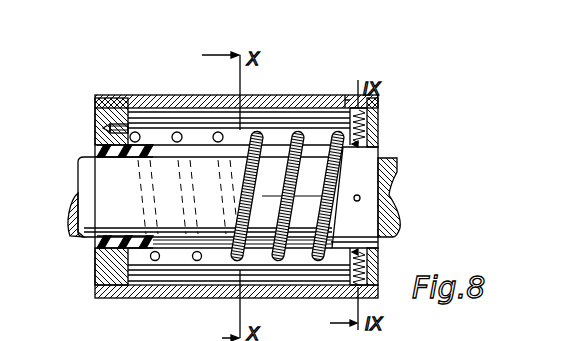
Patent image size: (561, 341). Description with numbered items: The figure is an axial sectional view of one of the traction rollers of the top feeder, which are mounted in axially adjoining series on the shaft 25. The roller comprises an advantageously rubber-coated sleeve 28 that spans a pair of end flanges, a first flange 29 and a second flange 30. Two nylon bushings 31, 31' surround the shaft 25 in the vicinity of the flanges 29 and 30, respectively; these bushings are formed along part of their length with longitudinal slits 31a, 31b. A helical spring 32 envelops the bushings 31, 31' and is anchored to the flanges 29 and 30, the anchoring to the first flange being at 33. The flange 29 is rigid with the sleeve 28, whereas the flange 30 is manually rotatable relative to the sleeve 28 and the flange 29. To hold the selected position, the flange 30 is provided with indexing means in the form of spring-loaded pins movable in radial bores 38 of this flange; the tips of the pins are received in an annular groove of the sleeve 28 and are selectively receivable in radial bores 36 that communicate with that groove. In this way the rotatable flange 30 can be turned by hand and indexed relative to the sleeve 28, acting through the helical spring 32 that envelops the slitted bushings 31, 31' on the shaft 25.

The shaft 25 is at (398, 216).
The sleeve 28 is at (288, 97).
The end flange 29 is at (99, 108).
The end flange 30 is at (377, 120).
The nylon bushing 31 is at (202, 177).
The nylon bushing 31' is at (385, 195).
The longitudinal slit 31a is at (173, 247).
The longitudinal slit 31b is at (295, 246).
The helical spring 32 is at (178, 131).
The anchoring point 33 is at (136, 131).
The radial bore 36 is at (356, 90).
The radial bore 38 is at (377, 130).